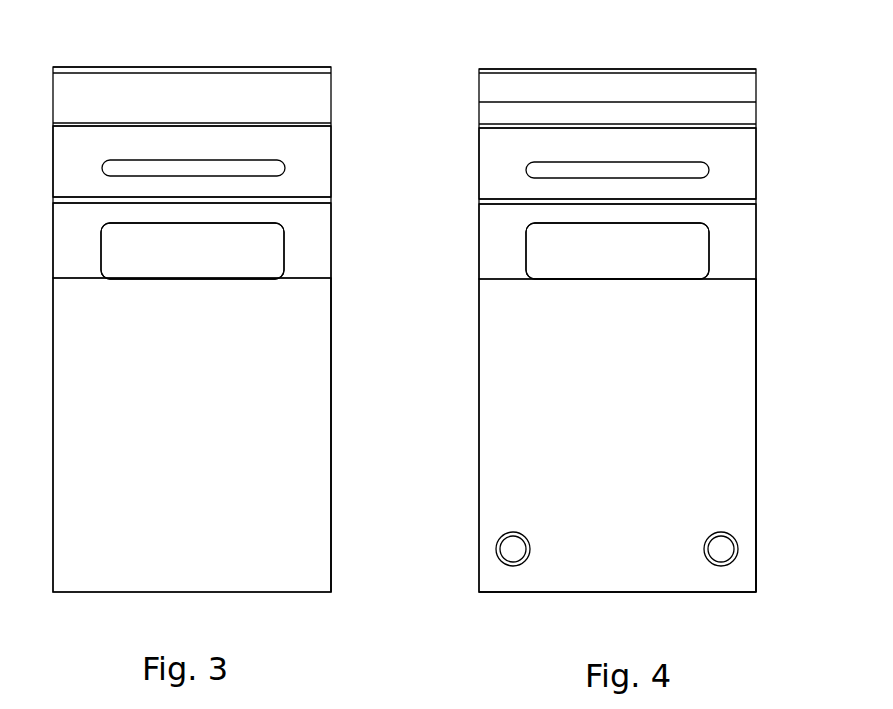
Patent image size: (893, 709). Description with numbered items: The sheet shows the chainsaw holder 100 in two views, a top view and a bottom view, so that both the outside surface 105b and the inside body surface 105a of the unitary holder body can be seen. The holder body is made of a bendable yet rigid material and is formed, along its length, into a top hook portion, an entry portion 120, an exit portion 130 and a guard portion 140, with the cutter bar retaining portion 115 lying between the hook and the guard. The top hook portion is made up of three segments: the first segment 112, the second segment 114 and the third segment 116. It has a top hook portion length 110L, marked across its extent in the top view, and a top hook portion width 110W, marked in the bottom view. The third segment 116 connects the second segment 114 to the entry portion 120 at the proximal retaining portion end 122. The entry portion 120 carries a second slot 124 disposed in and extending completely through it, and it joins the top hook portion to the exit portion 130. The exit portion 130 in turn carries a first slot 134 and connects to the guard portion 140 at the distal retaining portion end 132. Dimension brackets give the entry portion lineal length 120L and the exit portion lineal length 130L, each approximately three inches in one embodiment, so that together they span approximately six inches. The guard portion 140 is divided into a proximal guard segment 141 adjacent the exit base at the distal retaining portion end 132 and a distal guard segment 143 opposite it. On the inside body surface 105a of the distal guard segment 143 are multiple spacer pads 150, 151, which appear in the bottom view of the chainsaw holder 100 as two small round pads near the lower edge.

In FIG. 3, the chainsaw holder 100 is at (313, 608).
In FIG. 4, the chainsaw holder 100 is at (484, 617).
In FIG. 4, the inside body surface 105a is at (729, 459).
In FIG. 3, the outside surface 105b is at (307, 468).
In FIG. 3, the top hook portion length 110L is at (53, 62).
In FIG. 4, the top hook portion width 110W is at (479, 72).
In FIG. 4, the first segment 112 is at (735, 92).
In FIG. 3, the second segment 114 is at (310, 68).
In FIG. 4, the second segment 114 is at (503, 68).
In FIG. 3, the cutter bar retaining portion 115 is at (331, 204).
In FIG. 4, the cutter bar retaining portion 115 is at (433, 227).
In FIG. 3, the third segment 116 is at (70, 97).
In FIG. 3, the entry portion 120 is at (320, 153).
In FIG. 4, the entry portion 120 is at (488, 141).
In FIG. 3, the entry portion lineal length 120L is at (50, 123).
In FIG. 3, the proximal retaining portion end 122 is at (320, 121).
In FIG. 4, the proximal retaining portion end 122 is at (485, 125).
In FIG. 3, the second slot 124 is at (283, 168).
In FIG. 4, the second slot 124 is at (540, 168).
In FIG. 3, the exit portion 130 is at (313, 242).
In FIG. 4, the exit portion 130 is at (483, 250).
In FIG. 3, the exit portion lineal length 130L is at (50, 199).
In FIG. 3, the distal retaining portion end 132 is at (312, 278).
In FIG. 4, the distal retaining portion end 132 is at (485, 280).
In FIG. 3, the first slot 134 is at (251, 262).
In FIG. 4, the first slot 134 is at (442, 357).
In FIG. 3, the guard portion 140 is at (289, 530).
In FIG. 4, the guard portion 140 is at (500, 502).
In FIG. 4, the proximal guard segment 141 is at (694, 329).
In FIG. 4, the distal guard segment 143 is at (713, 515).
In FIG. 4, the spacer pad 150 is at (710, 538).
In FIG. 4, the spacer pad 151 is at (528, 538).